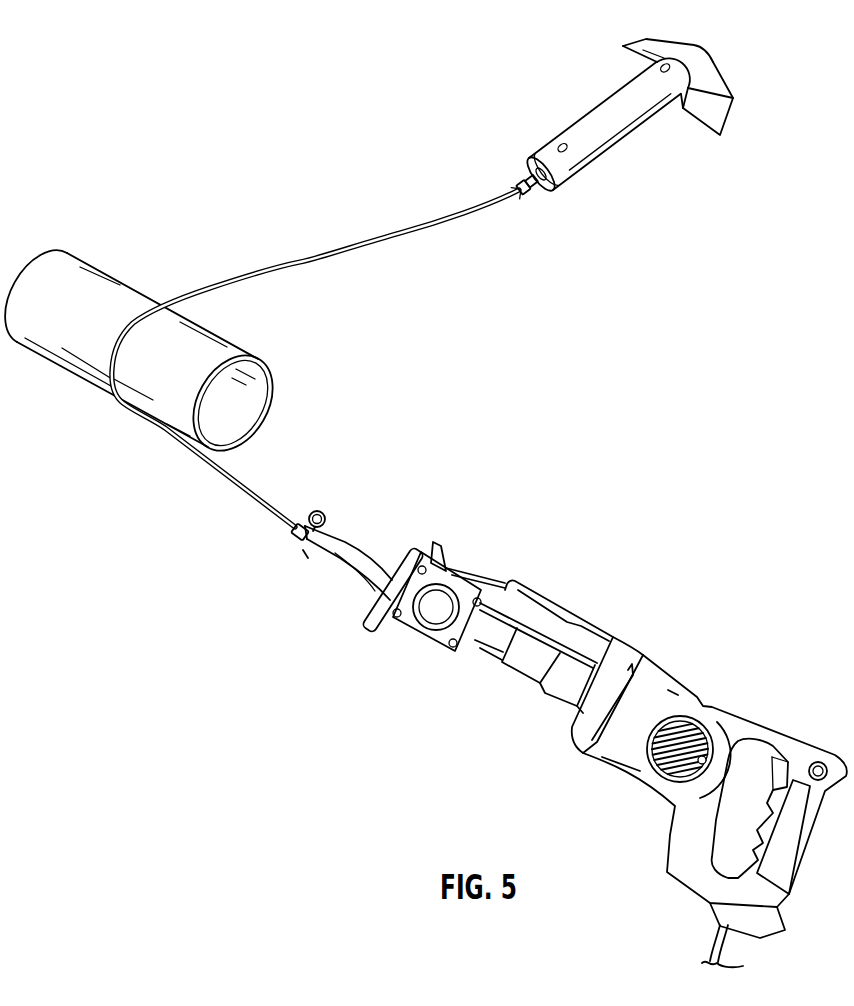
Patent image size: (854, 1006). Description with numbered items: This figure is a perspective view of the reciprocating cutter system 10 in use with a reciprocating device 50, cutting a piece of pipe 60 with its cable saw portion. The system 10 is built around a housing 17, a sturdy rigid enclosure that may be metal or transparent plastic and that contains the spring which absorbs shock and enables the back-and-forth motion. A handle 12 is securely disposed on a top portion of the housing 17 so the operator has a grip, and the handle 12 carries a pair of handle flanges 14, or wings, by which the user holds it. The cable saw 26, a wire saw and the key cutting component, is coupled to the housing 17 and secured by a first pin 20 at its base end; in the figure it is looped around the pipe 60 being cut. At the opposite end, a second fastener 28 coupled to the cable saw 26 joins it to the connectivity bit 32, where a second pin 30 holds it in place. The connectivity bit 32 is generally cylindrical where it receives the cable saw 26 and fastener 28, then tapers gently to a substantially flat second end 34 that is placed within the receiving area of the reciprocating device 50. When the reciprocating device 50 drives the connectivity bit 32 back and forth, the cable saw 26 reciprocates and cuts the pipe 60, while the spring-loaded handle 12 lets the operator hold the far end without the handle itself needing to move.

The reciprocating cutter system 10 is at (617, 106).
The handle 12 is at (703, 58).
The handle flanges 14 is at (720, 100).
The housing 17 is at (627, 123).
The first pin 20 is at (512, 177).
The cable saw 26 is at (326, 249).
The second fastener 28 is at (292, 538).
The second pin 30 is at (320, 511).
The connectivity bit 32 is at (333, 542).
The second end 34 is at (373, 570).
The reciprocating device 50 is at (652, 632).
The conduit 60 is at (53, 290).